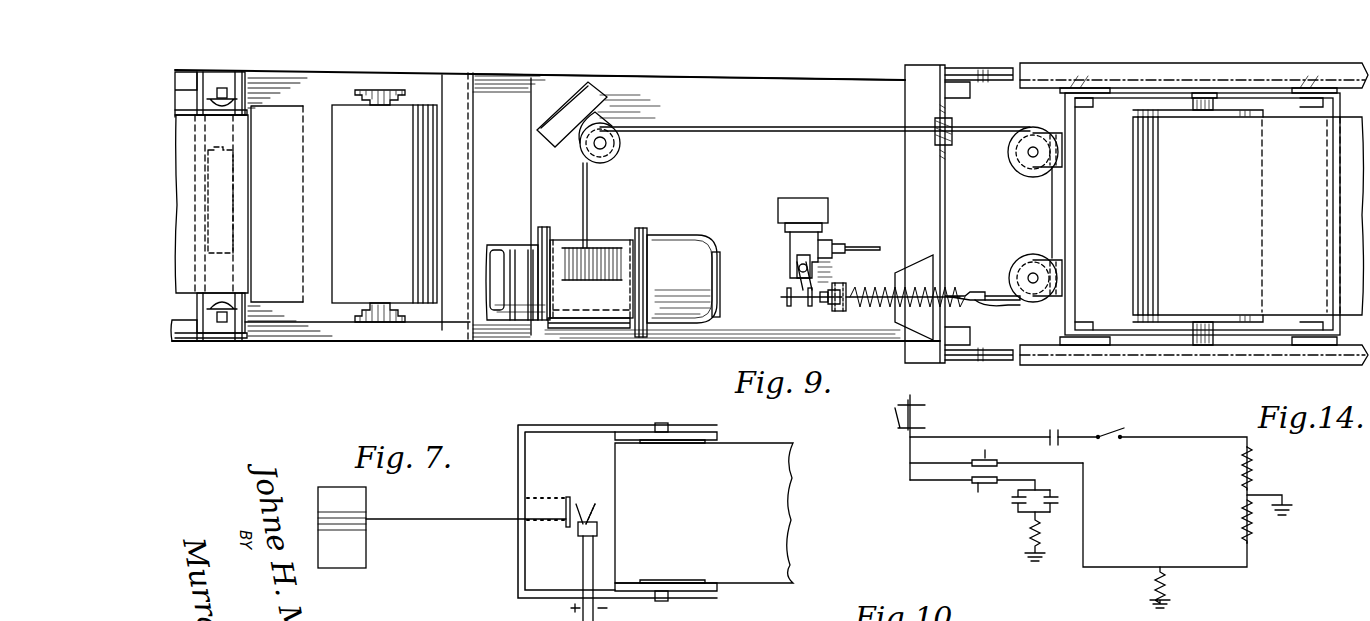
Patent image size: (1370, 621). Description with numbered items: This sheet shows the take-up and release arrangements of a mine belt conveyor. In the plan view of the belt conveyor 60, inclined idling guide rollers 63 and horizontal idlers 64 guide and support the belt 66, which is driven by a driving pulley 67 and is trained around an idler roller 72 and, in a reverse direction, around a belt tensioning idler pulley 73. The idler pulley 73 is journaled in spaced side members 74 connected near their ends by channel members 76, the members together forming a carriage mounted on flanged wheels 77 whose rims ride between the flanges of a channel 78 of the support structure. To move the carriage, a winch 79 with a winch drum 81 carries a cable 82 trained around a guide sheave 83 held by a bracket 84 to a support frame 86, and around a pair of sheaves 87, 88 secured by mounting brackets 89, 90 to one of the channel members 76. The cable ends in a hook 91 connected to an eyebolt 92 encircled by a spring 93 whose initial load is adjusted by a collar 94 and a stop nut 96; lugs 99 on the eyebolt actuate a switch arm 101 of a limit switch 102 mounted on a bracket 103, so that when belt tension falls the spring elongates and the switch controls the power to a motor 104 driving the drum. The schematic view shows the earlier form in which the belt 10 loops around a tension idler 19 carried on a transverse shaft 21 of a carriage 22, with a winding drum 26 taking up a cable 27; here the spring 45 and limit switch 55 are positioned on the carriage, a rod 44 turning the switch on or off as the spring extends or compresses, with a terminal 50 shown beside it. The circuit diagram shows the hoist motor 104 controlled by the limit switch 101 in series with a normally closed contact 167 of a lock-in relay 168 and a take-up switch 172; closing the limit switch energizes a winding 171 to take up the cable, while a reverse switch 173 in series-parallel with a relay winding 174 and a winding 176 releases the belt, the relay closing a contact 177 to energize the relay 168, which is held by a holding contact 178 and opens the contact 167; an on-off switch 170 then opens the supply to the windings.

In FIG. 9, the belt conveyor 60 is at (763, 72).
In FIG. 9, the inclined idling guide rollers 63 is at (233, 100).
In FIG. 9, the horizontal idlers 64 is at (232, 196).
In FIG. 9, the belt 66 is at (322, 250).
In FIG. 9, the driving pulley 67 is at (342, 322).
In FIG. 9, the idler roller 72 is at (278, 341).
In FIG. 9, the belt tensioning idler pulley 73 is at (1228, 345).
In FIG. 9, the spaced side members 74 is at (1112, 103).
In FIG. 9, the channel members 76 is at (1078, 245).
In FIG. 9, the flanged wheels 77 is at (1100, 77).
In FIG. 9, the channel 78 is at (1145, 70).
In FIG. 9, the winch 79 is at (670, 234).
In FIG. 9, the winch drum 81 is at (594, 248).
In FIG. 9, the cable 82 is at (590, 208).
In FIG. 9, the guide sheave 83 is at (618, 144).
In FIG. 9, the bracket 84 is at (612, 118).
In FIG. 9, the support frame 86 is at (545, 178).
In FIG. 9, the sheave 87 is at (1020, 162).
In FIG. 9, the sheave 88 is at (1022, 272).
In FIG. 9, the mounting bracket 89 is at (1040, 172).
In FIG. 9, the mounting bracket 90 is at (1040, 290).
In FIG. 9, the hook 91 is at (965, 300).
In FIG. 9, the eyebolt 92 is at (950, 290).
In FIG. 9, the spring 93 is at (860, 300).
In FIG. 9, the collar 94 is at (840, 285).
In FIG. 9, the stop nut 96 is at (832, 300).
In FIG. 9, the lugs 99 is at (806, 300).
In FIG. 9, the limit switch 101 is at (800, 284).
In FIG. 14, the limit switch 101 is at (1112, 435).
In FIG. 9, the limit switch 102 is at (792, 248).
In FIG. 9, the bracket 103 is at (815, 218).
In FIG. 9, the motor 104 is at (504, 245).
In FIG. 14, the motor 104 is at (1232, 547).
In FIG. 7, the belt 10 is at (758, 517).
In FIG. 7, the tension idler 19 is at (692, 440).
In FIG. 7, the transverse shaft 21 is at (661, 424).
In FIG. 7, the carriage 22 is at (675, 597).
In FIG. 7, the winding drum 26 is at (318, 495).
In FIG. 7, the cable 27 is at (432, 512).
In FIG. 7, the rod 44 is at (582, 492).
In FIG. 7, the spring 45 is at (540, 498).
In FIG. 7, the terminal plate 50 is at (567, 530).
In FIG. 7, the limit switch 55 is at (598, 527).
In FIG. 14, the normally closed contact 167 is at (1056, 434).
In FIG. 14, the lock-in relay 168 is at (1028, 540).
In FIG. 14, the on-off switch 170 is at (928, 411).
In FIG. 14, the winding 171 is at (1253, 482).
In FIG. 14, the forward or take-up switch 172 is at (985, 492).
In FIG. 14, the reverse switch 173 is at (990, 460).
In FIG. 14, the relay winding 174 is at (1173, 585).
In FIG. 14, the winding 176 is at (1258, 542).
In FIG. 14, the contact 177 is at (1058, 512).
In FIG. 14, the holding contact 178 is at (1010, 512).